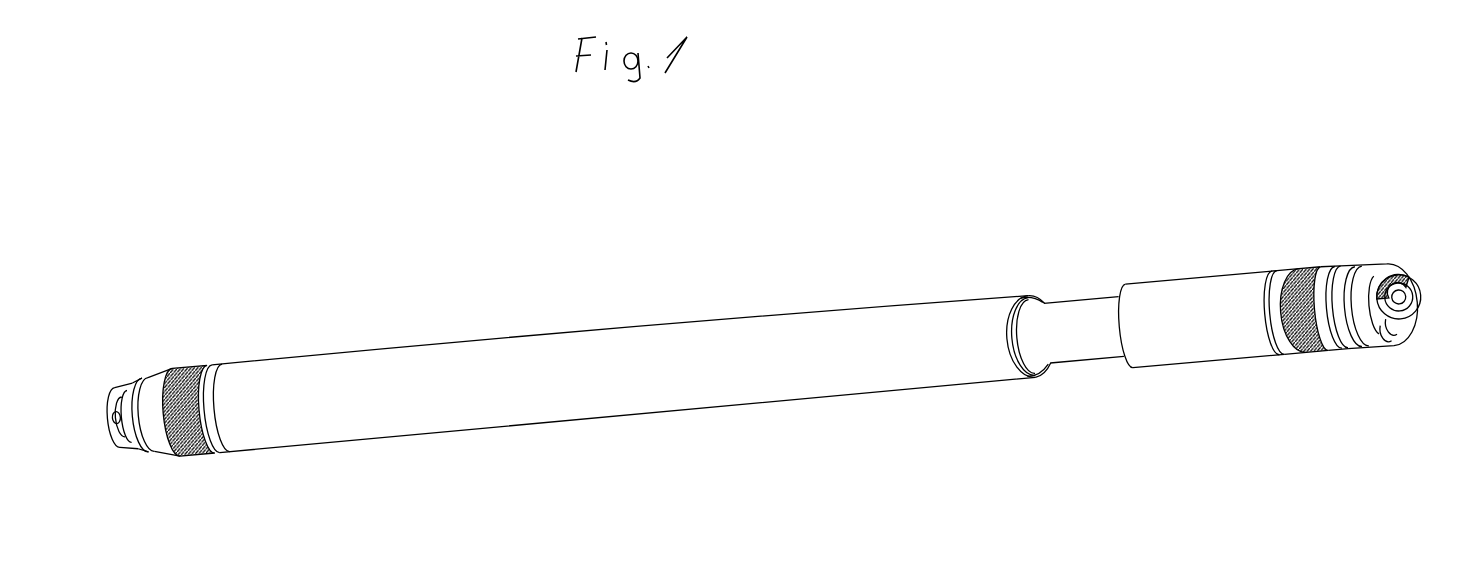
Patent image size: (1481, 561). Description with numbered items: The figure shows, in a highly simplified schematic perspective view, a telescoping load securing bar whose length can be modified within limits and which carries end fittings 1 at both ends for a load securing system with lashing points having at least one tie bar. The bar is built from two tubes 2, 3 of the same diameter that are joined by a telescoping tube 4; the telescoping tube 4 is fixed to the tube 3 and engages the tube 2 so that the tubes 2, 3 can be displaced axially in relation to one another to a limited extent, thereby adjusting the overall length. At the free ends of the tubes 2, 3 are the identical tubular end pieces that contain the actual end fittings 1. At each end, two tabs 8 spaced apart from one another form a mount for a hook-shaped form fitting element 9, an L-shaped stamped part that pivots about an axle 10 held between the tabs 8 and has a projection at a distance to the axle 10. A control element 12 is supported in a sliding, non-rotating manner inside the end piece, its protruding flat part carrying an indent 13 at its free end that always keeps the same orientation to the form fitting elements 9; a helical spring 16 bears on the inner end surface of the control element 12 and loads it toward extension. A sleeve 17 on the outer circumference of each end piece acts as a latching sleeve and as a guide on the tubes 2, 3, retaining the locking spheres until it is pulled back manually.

The end fitting 1 is at (119, 350).
The tube 2 is at (810, 325).
The tube 3 is at (1200, 290).
The telescoping tube 4 is at (1093, 305).
The tabs 8 is at (1365, 345).
The hook-shaped form fitting element 9 is at (1386, 338).
The axle 10 is at (1332, 343).
The control element 12 is at (1400, 260).
The indent 13 is at (1405, 283).
The helical spring 16 is at (1358, 270).
The sleeve 17 is at (1314, 270).